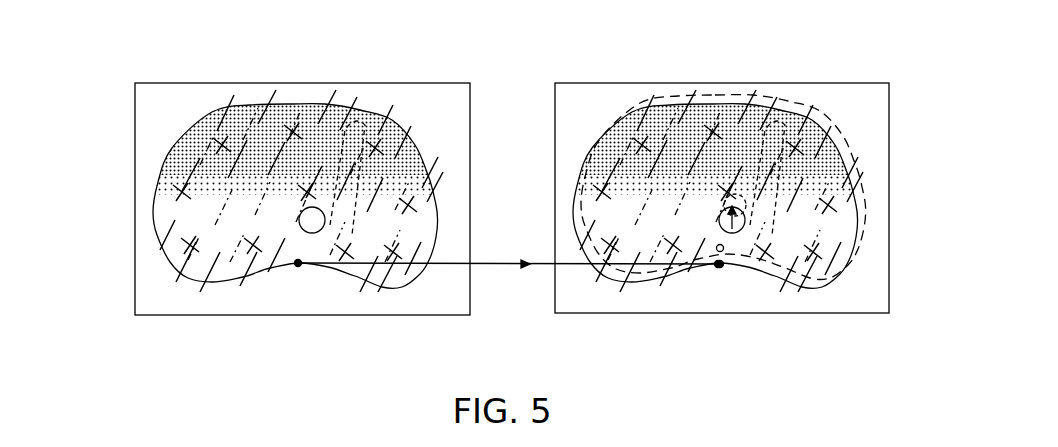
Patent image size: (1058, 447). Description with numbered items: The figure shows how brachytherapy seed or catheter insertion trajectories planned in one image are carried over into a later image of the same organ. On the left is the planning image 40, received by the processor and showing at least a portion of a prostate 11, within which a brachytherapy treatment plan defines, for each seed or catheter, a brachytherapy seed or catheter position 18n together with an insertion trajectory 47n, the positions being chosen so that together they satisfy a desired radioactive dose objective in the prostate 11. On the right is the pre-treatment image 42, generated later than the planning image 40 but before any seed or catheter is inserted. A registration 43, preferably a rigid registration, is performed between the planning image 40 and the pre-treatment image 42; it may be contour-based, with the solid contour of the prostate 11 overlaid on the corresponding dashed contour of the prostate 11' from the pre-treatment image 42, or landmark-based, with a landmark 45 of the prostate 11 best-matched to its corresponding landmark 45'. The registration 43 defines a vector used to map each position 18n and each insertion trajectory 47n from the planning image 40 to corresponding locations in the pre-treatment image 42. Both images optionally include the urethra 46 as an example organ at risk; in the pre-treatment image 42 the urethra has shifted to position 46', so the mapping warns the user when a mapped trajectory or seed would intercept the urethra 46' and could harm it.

The planning image 40 is at (135, 105).
The pre-treatment image 42 is at (555, 105).
The prostate 11 is at (471, 144).
The prostate contour from pre-treatment image 11' is at (723, 153).
The insertion trajectory 47n is at (226, 143).
The brachytherapy seed or catheter position 18n is at (228, 143).
The urethra 46 is at (458, 313).
The shifted urethra position 46' is at (829, 173).
The landmark 45 is at (757, 321).
The corresponding landmark 45' is at (769, 300).
The registration 43 is at (527, 272).